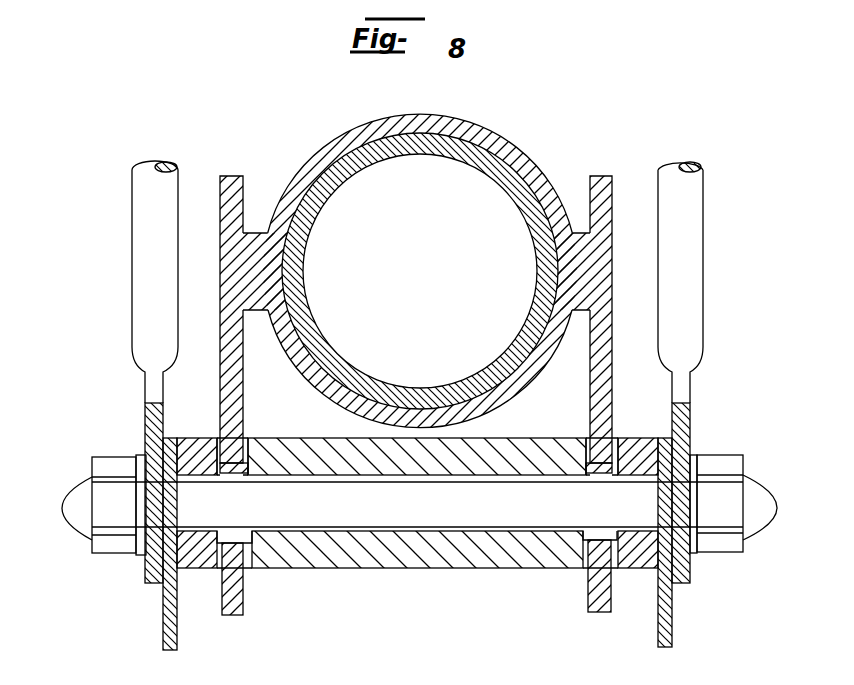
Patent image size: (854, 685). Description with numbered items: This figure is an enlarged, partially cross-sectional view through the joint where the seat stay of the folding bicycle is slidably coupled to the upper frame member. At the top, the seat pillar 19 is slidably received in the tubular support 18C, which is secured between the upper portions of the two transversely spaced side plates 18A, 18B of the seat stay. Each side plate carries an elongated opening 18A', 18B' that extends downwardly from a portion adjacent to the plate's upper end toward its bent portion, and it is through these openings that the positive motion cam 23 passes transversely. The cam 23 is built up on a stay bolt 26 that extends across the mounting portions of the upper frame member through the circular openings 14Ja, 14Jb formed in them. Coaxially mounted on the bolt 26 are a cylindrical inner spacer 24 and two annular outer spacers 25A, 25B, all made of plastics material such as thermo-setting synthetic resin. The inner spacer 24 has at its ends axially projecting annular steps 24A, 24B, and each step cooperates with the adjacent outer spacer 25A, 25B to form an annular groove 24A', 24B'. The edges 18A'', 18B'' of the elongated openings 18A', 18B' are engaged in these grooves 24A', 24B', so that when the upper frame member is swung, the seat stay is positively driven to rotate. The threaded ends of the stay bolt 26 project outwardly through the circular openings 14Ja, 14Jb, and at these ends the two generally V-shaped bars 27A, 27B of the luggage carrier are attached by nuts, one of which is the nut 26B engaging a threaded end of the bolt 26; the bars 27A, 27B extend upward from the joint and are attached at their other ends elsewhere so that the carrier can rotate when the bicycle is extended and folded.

The side plate 18A is at (199, 298).
The side plate 18B is at (652, 290).
The tubular support 18C is at (333, 145).
The seat pillar 19 is at (452, 150).
The bar 27A is at (150, 307).
The bar 27B is at (680, 255).
The circular opening 14Ja is at (147, 463).
The circular opening 14Jb is at (673, 460).
The cylindrical inner spacer 24 is at (427, 570).
The annular step 24A is at (195, 424).
The annular groove 24A' is at (276, 425).
The annular step 24B is at (560, 424).
The annular groove 24B' is at (645, 418).
The positive motion cam 23 is at (378, 582).
The stay bolt 26 is at (113, 545).
The nut 26B is at (723, 540).
The annular outer spacer 25A is at (200, 553).
The annular outer spacer 25B is at (640, 553).
The elongated opening 18A' is at (265, 598).
The elongated opening 18B' is at (578, 602).
The edge 18A'' is at (295, 563).
The edge 18B'' is at (556, 550).